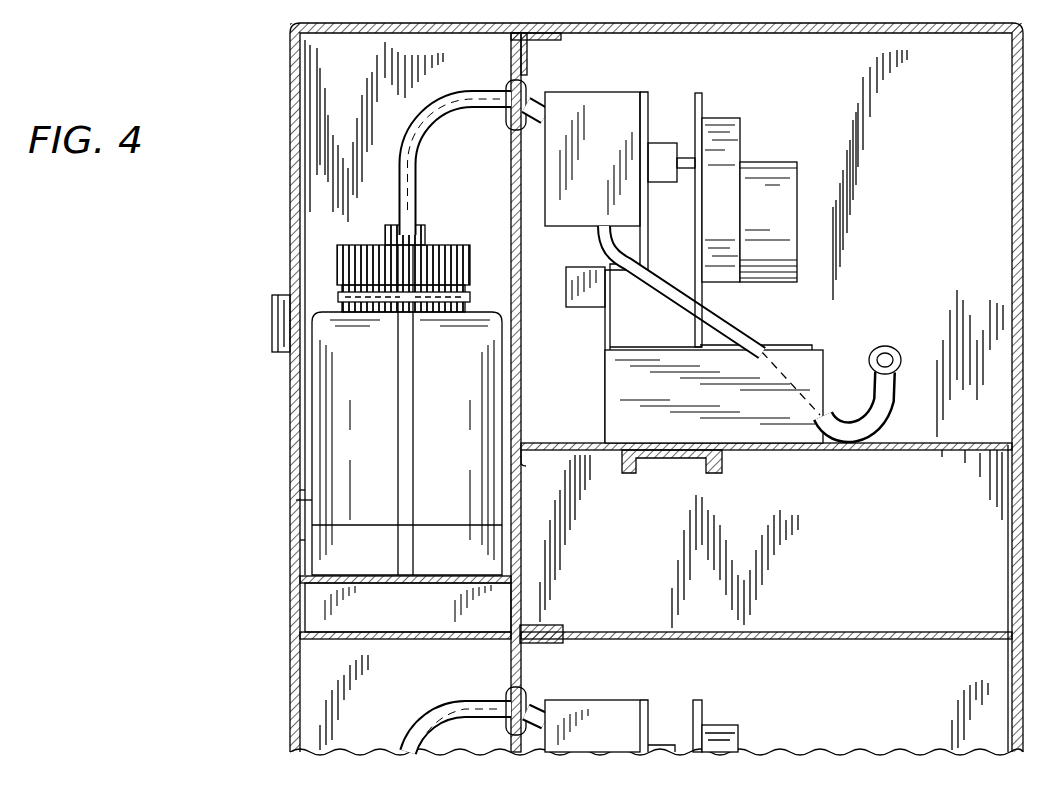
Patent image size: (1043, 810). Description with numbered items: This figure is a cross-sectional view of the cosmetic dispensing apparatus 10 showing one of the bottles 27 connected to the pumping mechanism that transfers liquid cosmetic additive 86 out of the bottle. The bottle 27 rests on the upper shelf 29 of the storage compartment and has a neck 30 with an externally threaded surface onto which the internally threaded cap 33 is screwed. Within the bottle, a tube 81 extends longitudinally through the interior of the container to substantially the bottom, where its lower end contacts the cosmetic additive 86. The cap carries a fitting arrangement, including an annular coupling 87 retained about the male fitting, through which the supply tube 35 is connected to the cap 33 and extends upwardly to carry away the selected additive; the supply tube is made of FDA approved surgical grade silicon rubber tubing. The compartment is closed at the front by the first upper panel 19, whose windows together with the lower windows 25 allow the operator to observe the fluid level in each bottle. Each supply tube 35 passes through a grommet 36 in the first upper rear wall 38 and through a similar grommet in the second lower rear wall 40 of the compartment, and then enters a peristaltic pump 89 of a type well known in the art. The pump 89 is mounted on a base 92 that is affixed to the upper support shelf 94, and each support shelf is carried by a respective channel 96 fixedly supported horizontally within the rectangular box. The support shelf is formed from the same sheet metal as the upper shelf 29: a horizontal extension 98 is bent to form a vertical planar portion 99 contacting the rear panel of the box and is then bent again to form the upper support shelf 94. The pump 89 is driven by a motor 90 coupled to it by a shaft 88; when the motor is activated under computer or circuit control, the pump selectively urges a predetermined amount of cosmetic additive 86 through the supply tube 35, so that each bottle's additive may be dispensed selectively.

The housing 10 is at (1015, 457).
The first upper panel 19 is at (290, 395).
The lower windows 25 is at (292, 545).
The bottle 27 is at (300, 505).
The upper shelf 29 is at (300, 625).
The neck 30 is at (345, 294).
The cap 33 is at (468, 250).
The supply tube 35 is at (413, 155).
The grommet 36 is at (506, 92).
The first upper rear wall 38 is at (514, 184).
The second lower rear wall 40 is at (511, 657).
The tube 81 is at (400, 392).
The cosmetic additive 86 is at (302, 572).
The annular coupling 87 is at (388, 232).
The shaft 88 is at (693, 160).
The peristaltic pump 89 is at (611, 86).
The motor 90 is at (786, 162).
The base 92 is at (830, 364).
The upper support shelf 94 is at (955, 450).
The channel 96 is at (724, 465).
The horizontal extension 98 is at (842, 632).
The vertical planar portion 99 is at (1010, 600).